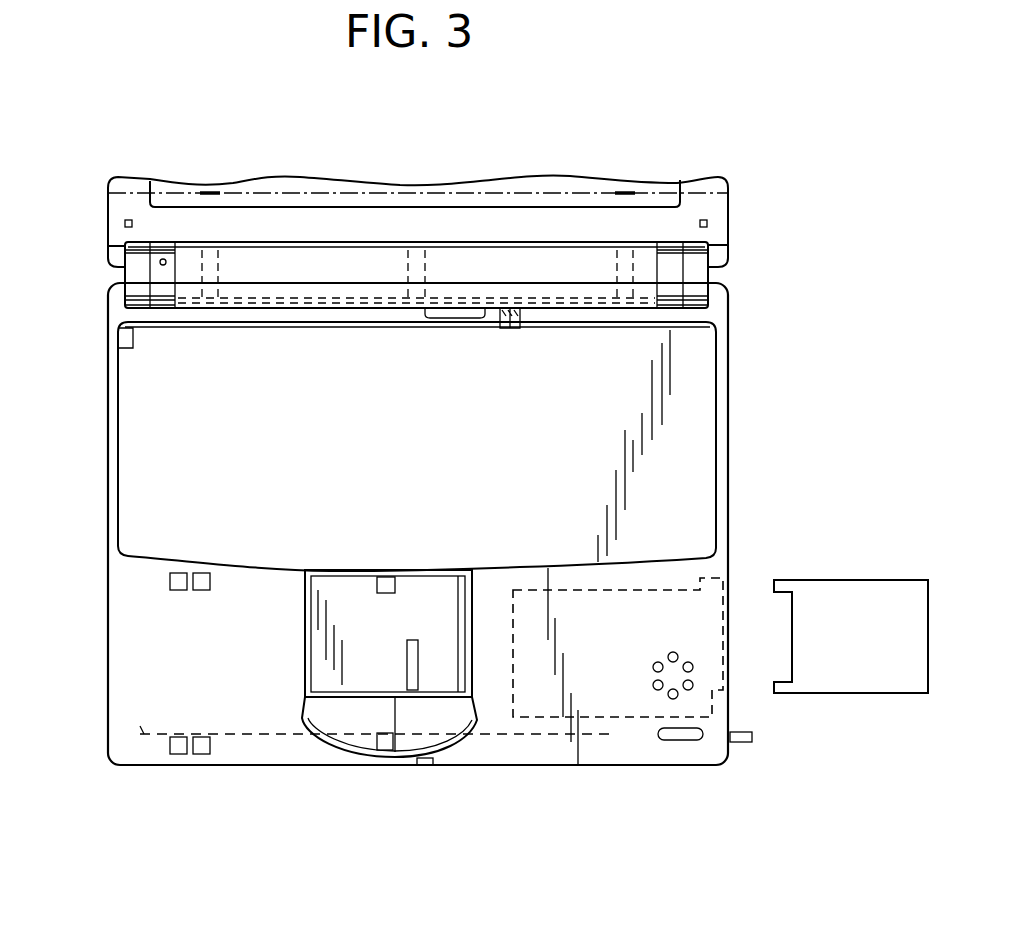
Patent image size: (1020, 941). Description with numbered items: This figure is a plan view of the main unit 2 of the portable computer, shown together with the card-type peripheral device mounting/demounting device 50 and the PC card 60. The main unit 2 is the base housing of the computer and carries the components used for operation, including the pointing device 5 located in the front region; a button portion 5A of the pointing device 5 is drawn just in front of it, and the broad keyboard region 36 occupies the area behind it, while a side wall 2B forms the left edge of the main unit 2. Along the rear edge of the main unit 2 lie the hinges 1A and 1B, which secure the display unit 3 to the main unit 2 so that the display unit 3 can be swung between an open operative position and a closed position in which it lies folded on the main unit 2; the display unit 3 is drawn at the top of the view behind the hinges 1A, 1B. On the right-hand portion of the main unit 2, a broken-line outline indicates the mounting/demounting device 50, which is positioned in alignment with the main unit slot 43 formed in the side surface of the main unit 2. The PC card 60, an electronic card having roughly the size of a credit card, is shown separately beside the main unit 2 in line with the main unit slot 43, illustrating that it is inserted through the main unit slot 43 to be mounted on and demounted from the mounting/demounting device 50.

The display unit 3 is at (108, 190).
The hinge 1A is at (686, 312).
The hinge 1B is at (148, 308).
The main unit 2 is at (84, 638).
The side wall of main body 2B is at (108, 678).
The keyboard 36 is at (716, 517).
The pointing device 5 is at (285, 679).
The pointing device button portion 5A is at (382, 722).
The main unit slot 43 is at (727, 650).
The mounting/demounting device 50 is at (620, 718).
The PC card 60 is at (865, 683).